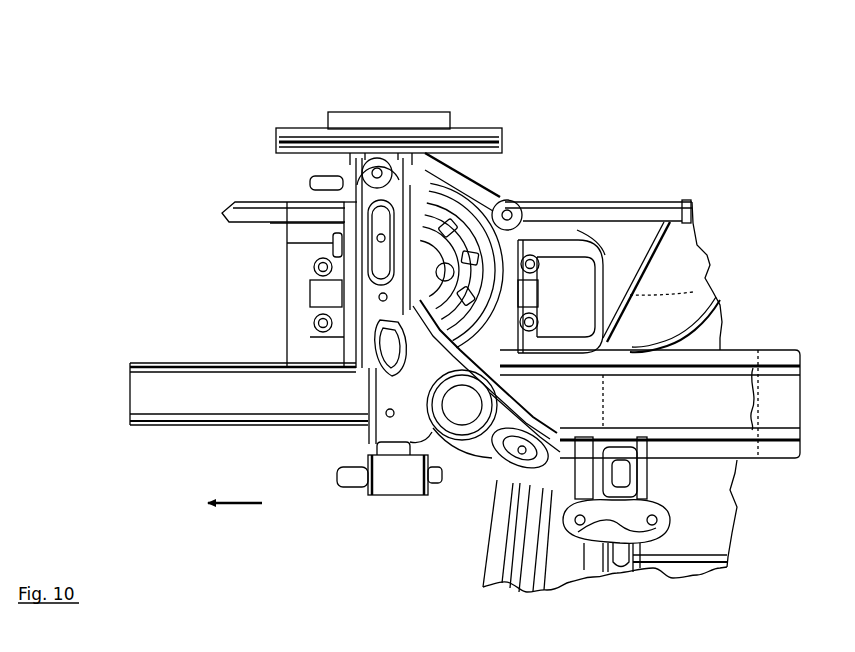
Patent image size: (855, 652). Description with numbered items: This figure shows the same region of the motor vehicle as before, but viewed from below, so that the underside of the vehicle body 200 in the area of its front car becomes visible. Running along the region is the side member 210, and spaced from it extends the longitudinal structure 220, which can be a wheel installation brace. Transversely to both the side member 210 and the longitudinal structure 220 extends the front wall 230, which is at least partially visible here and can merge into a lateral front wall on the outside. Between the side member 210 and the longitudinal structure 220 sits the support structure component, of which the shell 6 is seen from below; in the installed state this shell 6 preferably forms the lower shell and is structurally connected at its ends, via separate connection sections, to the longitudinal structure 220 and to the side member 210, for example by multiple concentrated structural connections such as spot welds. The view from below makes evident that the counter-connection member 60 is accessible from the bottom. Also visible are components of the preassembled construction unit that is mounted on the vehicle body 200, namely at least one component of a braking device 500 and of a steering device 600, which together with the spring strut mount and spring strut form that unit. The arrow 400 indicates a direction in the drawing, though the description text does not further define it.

The vehicle body 200 is at (627, 111).
The braking device 500 is at (400, 124).
The longitudinal structure 220 is at (238, 212).
The shell 6 is at (305, 241).
The counter-connection member 60 is at (531, 256).
The front wall 230 is at (694, 304).
The side member 210 is at (213, 393).
The steering device 600 is at (393, 437).
The travel direction arrow 400 is at (236, 511).